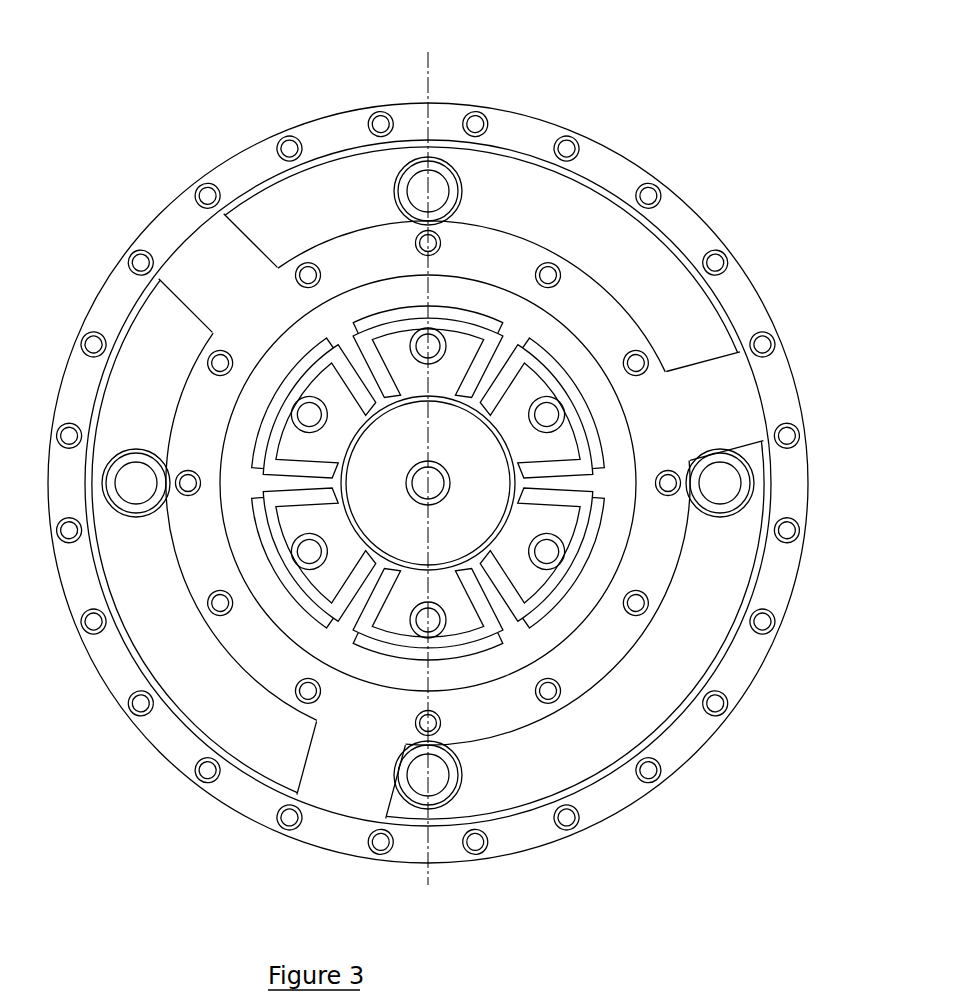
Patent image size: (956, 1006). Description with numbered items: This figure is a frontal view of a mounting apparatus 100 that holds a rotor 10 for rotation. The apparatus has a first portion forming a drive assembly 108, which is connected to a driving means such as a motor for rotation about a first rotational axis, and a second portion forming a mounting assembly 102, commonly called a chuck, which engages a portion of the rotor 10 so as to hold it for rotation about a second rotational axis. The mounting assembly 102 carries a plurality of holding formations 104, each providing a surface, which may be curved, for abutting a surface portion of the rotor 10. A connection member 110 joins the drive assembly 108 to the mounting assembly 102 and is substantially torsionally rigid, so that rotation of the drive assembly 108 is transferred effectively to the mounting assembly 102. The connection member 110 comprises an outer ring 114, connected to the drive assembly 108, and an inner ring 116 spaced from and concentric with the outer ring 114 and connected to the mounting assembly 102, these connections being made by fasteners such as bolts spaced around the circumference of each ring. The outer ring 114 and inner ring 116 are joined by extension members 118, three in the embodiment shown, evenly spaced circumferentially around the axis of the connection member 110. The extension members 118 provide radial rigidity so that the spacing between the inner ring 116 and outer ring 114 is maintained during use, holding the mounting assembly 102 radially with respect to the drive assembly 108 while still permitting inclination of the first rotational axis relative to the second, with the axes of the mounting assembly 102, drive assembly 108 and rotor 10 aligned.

The rotor 10 is at (465, 527).
The mounting apparatus 100 is at (630, 107).
The mounting assembly 102 is at (518, 635).
The holding formation 104 is at (450, 345).
The drive assembly 108 is at (355, 180).
The connection member 110 is at (240, 300).
The outer ring 114 is at (237, 172).
The inner ring 116 is at (257, 650).
The extension member 118 is at (722, 405).